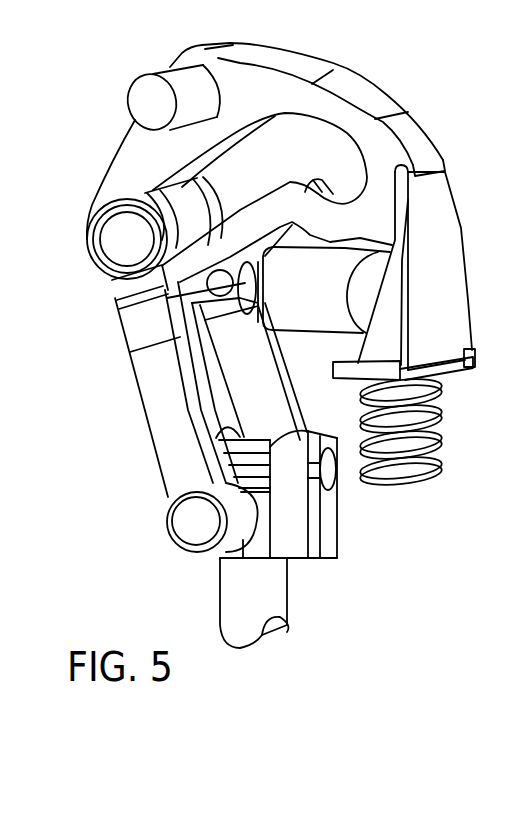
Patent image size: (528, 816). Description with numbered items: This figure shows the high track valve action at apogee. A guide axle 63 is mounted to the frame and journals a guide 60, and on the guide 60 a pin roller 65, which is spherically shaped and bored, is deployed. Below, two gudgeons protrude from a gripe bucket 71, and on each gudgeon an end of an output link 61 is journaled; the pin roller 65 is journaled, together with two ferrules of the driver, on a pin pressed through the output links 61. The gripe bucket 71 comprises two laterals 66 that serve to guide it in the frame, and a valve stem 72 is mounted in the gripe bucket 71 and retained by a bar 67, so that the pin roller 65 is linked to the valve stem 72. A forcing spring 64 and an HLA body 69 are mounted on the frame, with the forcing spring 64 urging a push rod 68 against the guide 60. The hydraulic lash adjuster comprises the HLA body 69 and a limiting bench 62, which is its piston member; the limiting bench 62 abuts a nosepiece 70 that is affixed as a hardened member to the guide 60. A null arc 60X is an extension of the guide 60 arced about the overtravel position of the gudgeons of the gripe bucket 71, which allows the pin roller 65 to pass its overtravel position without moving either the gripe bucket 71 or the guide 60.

The guide 60 is at (268, 101).
The null arc 60X is at (335, 193).
The output link 61 is at (182, 421).
The limiting bench 62 is at (252, 277).
The guide axle 63 is at (152, 102).
The forcing spring 64 is at (428, 430).
The pin roller 65 is at (185, 212).
The lateral 66 is at (328, 540).
The bar 67 is at (245, 465).
The push rod 68 is at (448, 298).
The HLA body 69 is at (320, 299).
The nosepiece 70 is at (222, 278).
The gripe bucket 71 is at (295, 530).
The valve stem 72 is at (267, 604).